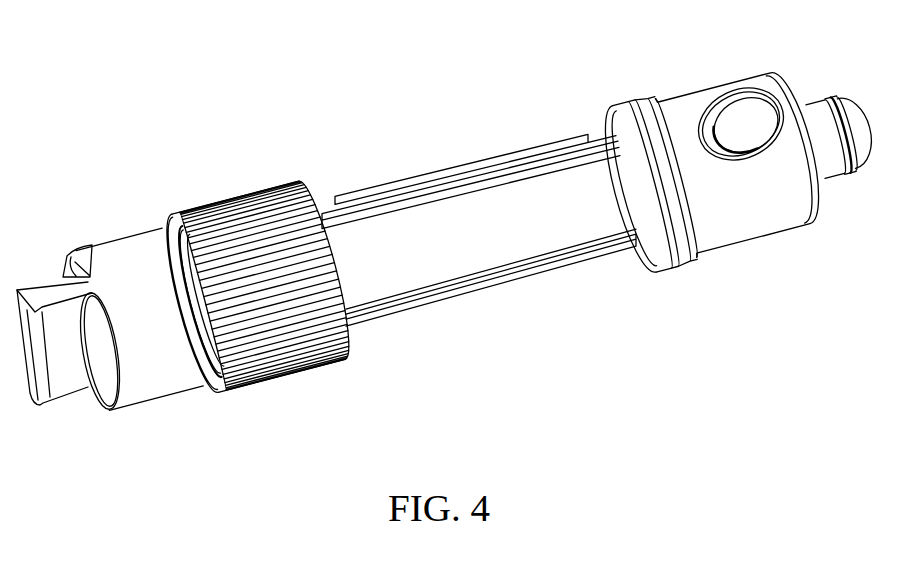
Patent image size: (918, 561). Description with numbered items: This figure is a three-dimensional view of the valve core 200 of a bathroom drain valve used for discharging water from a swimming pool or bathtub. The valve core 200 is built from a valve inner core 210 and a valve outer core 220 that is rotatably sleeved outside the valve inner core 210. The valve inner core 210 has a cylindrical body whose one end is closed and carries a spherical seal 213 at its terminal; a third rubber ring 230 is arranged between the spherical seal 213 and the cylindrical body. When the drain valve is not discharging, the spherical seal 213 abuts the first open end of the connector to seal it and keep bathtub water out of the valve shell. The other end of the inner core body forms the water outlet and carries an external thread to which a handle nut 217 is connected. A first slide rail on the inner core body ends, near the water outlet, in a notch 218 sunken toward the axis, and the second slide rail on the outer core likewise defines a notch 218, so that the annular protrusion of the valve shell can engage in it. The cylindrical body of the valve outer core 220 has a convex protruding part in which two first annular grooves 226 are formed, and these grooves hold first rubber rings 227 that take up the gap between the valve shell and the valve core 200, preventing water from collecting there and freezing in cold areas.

The valve core 200 is at (435, 148).
The valve inner core 210 is at (192, 280).
The spherical seal 213 is at (847, 120).
The handle nut 217 is at (102, 327).
The notch 218 is at (323, 227).
The valve outer core 220 is at (700, 167).
The first annular groove 226 is at (685, 265).
The first rubber ring 227 is at (633, 127).
The third rubber ring 230 is at (812, 113).